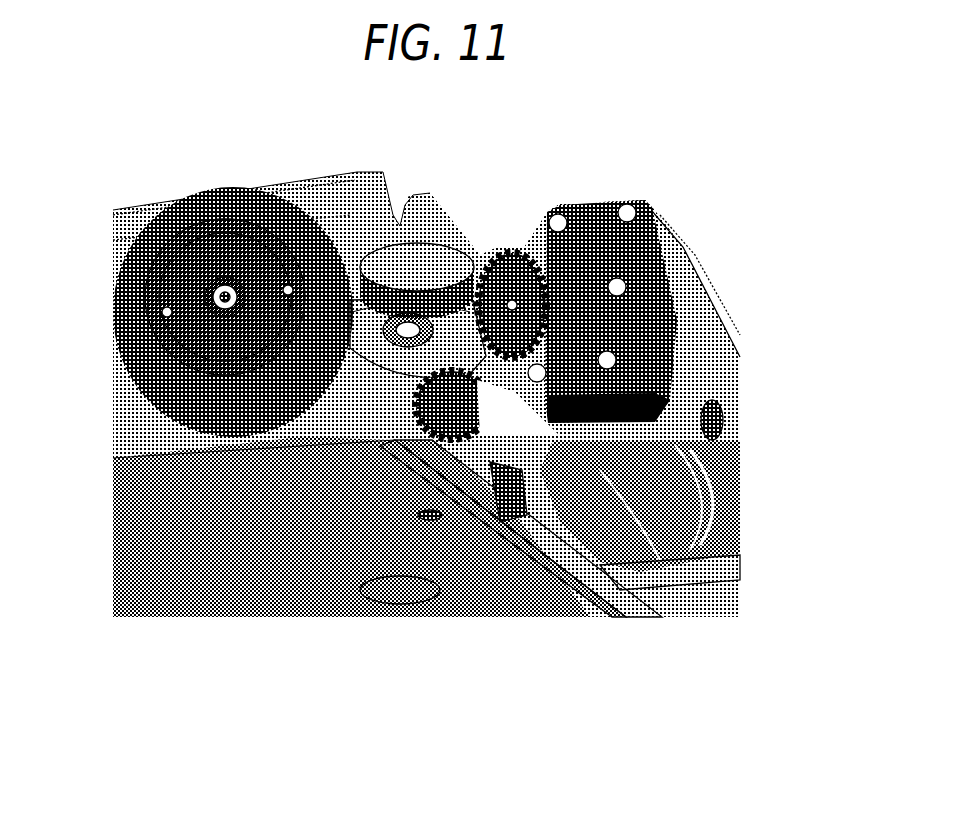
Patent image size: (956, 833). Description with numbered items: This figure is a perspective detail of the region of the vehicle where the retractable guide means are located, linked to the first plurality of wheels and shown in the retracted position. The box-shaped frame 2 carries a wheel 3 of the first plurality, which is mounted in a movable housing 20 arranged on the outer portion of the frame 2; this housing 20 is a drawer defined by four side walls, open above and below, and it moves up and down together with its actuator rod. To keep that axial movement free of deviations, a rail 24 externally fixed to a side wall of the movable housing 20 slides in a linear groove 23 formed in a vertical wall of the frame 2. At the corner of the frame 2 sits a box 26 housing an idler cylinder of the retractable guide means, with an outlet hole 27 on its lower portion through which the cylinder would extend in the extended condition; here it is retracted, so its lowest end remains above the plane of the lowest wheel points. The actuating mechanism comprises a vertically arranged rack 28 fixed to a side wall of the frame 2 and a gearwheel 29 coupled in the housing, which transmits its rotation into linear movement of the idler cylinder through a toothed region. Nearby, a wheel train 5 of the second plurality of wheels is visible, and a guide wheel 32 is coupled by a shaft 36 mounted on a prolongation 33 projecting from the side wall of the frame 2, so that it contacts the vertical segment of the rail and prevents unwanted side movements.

The box-shaped frame 2 is at (267, 578).
The wheel 3 is at (637, 513).
The wheel train 5 is at (207, 240).
The movable housing 20 is at (704, 364).
The linear groove 23 is at (497, 508).
The rail 24 is at (520, 518).
The box 26 is at (598, 228).
The outlet hole 27 is at (593, 393).
The rack 28 is at (458, 415).
The gearwheel 29 is at (512, 258).
The guide wheel 32 is at (402, 267).
The prolongation 33 is at (413, 355).
The shaft 36 is at (402, 323).